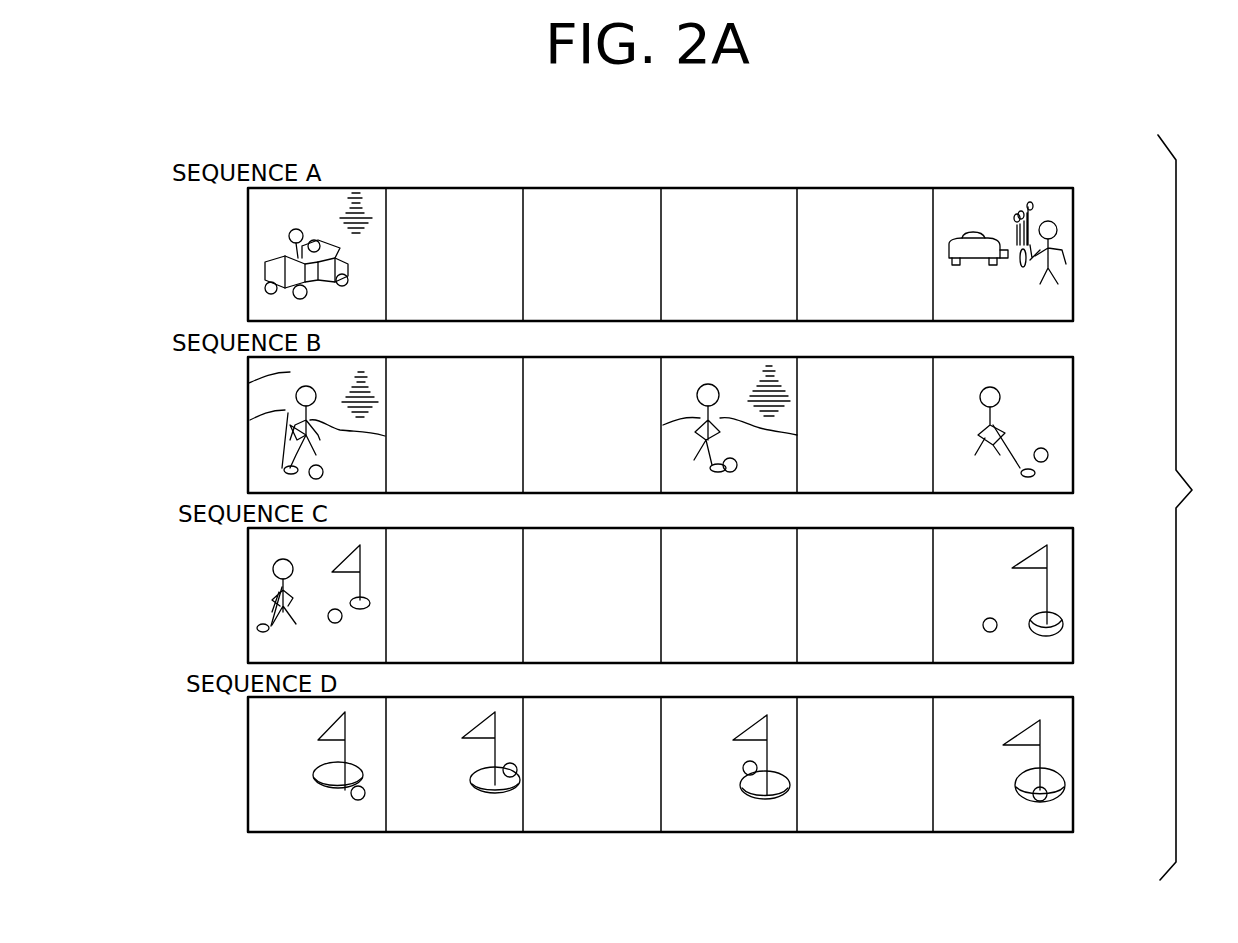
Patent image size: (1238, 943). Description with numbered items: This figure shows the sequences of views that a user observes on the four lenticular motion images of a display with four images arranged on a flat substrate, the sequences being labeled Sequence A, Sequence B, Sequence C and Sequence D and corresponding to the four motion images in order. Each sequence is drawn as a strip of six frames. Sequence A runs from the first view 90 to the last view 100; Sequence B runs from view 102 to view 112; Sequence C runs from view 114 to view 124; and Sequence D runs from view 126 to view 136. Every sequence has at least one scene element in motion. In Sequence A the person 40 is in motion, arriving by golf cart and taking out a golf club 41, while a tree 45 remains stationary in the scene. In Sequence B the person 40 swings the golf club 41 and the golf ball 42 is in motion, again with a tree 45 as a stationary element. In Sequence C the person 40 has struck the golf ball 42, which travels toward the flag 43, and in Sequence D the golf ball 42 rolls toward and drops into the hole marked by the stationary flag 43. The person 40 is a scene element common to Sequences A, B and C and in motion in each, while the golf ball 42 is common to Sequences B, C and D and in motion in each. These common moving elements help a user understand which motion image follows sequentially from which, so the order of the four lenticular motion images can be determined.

The view 90 is at (340, 187).
The view 100 is at (1011, 187).
The view 102 is at (248, 374).
The view 112 is at (1003, 356).
The view 114 is at (248, 645).
The view 124 is at (1038, 663).
The view 126 is at (288, 833).
The view 136 is at (971, 829).
The person 40 is at (285, 236).
The golf club 41 is at (1020, 286).
The golf ball 42 is at (325, 472).
The flag 43 is at (1050, 581).
The tree 45 is at (366, 402).